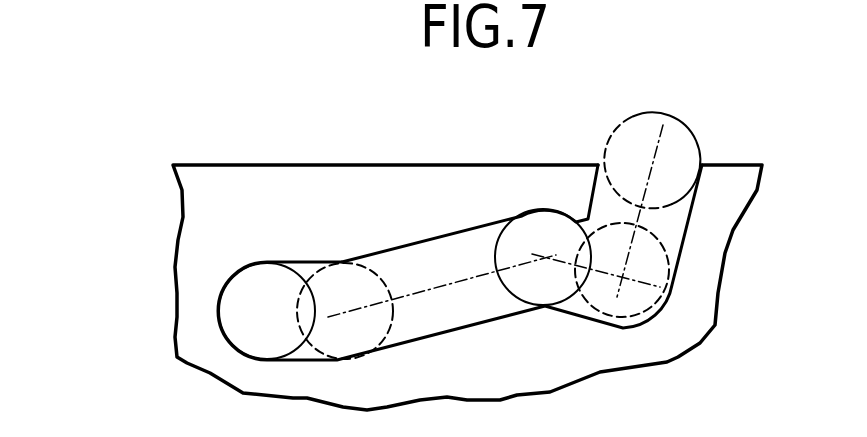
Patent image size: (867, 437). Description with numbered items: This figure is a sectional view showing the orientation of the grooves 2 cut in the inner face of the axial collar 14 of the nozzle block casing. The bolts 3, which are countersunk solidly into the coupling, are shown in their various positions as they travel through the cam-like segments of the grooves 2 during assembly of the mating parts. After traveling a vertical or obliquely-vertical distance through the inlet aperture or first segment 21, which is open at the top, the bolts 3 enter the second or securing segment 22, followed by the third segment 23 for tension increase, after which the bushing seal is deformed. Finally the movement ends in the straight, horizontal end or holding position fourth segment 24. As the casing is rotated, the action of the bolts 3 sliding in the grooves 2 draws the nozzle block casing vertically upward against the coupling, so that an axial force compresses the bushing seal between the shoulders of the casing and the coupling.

The axial collar 14 is at (203, 238).
The grooves 2 is at (497, 380).
The bolts 3 is at (678, 136).
The inlet aperture (first segment) 21 is at (593, 204).
The securing segment (second segment) 22 is at (522, 216).
The third segment 23 is at (424, 244).
The holding position (fourth segment) 24 is at (305, 262).